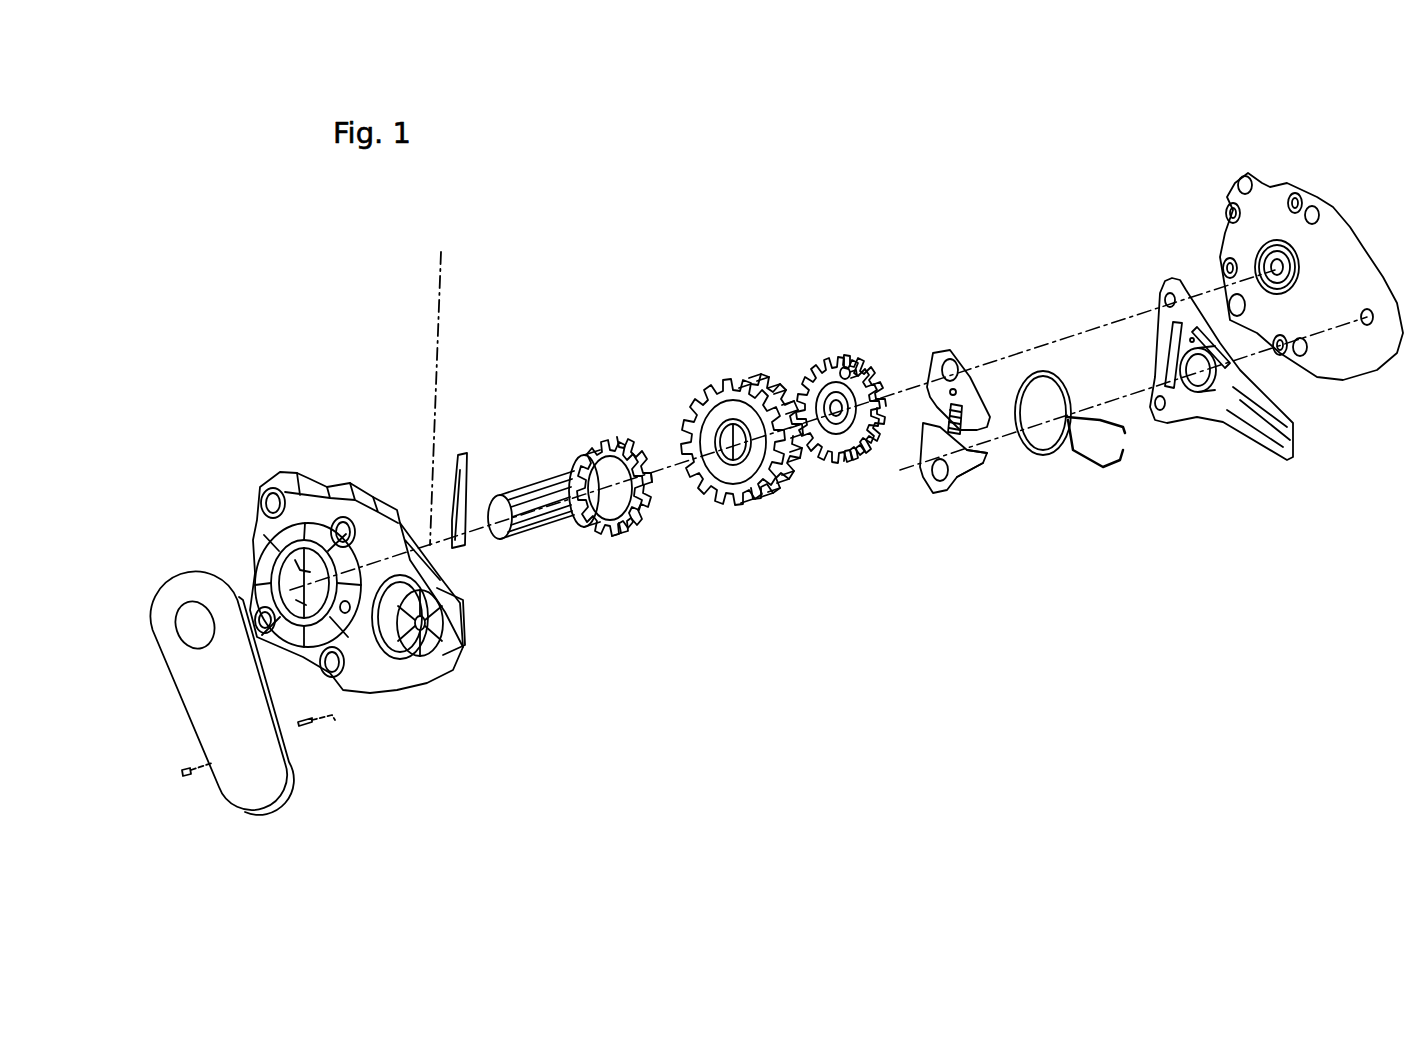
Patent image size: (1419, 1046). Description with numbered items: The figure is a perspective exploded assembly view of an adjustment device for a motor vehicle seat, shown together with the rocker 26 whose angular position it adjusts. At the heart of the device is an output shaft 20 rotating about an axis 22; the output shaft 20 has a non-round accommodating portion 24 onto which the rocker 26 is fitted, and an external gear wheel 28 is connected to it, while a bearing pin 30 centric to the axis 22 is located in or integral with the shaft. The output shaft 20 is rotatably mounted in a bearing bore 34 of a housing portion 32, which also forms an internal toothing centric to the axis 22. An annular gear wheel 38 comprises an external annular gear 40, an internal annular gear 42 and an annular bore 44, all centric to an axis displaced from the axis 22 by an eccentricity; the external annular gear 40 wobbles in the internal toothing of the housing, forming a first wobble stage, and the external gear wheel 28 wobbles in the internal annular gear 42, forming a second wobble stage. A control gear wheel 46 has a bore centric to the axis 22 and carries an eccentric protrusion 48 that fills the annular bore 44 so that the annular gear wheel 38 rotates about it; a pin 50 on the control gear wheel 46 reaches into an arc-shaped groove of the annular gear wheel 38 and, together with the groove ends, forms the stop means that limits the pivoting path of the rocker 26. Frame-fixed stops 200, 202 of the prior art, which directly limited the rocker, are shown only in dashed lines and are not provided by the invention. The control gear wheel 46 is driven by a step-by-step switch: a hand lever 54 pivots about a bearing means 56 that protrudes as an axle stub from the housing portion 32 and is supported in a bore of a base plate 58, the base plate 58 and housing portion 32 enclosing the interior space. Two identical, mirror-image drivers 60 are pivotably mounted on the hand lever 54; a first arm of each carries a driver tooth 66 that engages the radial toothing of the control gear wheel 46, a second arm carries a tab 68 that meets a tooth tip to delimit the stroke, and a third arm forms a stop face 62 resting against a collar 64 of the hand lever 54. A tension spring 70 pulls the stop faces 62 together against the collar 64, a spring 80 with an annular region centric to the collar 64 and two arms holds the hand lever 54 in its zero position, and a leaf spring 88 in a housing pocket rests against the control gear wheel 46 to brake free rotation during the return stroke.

The output shaft 20 is at (542, 344).
The axis 22 is at (828, 402).
The non-round accommodating portion 24 is at (520, 475).
The rocker 26 is at (287, 787).
The external gear wheel 28 is at (615, 505).
The bearing pin 30 is at (640, 477).
The housing portion 32 is at (273, 485).
The bearing bore 34 is at (285, 568).
The annular gear wheel 38 is at (726, 418).
The external annular gear 40 is at (707, 495).
The internal annular gear 42 is at (727, 445).
The annular bore 44 is at (727, 440).
The control gear wheel 46 is at (833, 400).
The eccentric protrusion 48 is at (857, 415).
The pin 50 is at (843, 373).
The hand lever 54 is at (1293, 470).
The bearing means 56 is at (415, 615).
The base plate 58 is at (1272, 190).
The driver 60 is at (975, 458).
The stop face 62 is at (998, 447).
The collar 64 is at (1232, 496).
The driver tooth 66 is at (930, 393).
The tab 68 is at (990, 613).
The tension spring 70 is at (993, 397).
The spring 80 is at (1043, 372).
The leaf spring 88 is at (465, 550).
The stop 200 is at (195, 780).
The stop 202 is at (333, 732).